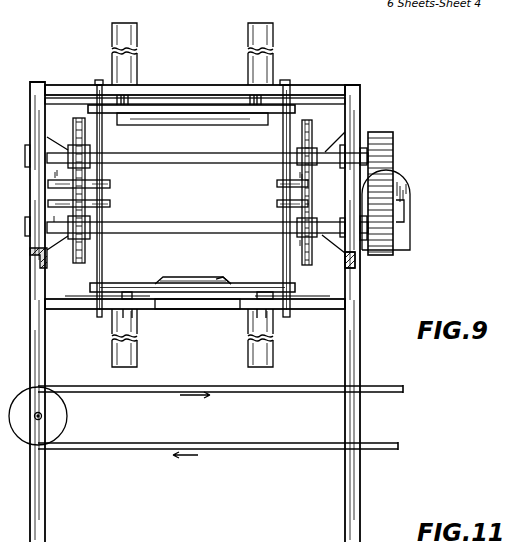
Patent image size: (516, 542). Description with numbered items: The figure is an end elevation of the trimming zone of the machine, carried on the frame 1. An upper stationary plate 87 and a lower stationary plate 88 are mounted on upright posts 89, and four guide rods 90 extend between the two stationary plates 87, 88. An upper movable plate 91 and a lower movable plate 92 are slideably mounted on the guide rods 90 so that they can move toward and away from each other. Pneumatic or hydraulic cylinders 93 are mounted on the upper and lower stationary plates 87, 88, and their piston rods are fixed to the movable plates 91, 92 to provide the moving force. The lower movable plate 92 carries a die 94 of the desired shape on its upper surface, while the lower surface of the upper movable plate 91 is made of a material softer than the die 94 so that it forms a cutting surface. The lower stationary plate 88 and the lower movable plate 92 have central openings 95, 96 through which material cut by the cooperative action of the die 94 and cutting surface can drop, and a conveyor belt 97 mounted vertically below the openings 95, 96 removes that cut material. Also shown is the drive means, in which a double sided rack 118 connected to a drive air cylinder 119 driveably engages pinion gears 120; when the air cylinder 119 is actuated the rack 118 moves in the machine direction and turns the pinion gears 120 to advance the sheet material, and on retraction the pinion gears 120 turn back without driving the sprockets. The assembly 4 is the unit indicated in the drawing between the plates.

The frame 1 is at (356, 268).
The drive assembly 4 is at (196, 187).
The upper stationary plate 87 is at (210, 92).
The lower stationary plate 88 is at (189, 309).
The upright posts 89 is at (45, 488).
The guide rods 90 is at (103, 140).
The upper movable plate 91 is at (212, 108).
The lower movable plate 92 is at (260, 287).
The pneumatic or hydraulic cylinders 93 is at (137, 68).
The die 94 is at (183, 280).
The central opening 95 is at (220, 279).
The central opening 96 is at (236, 300).
The conveyor belt 97 is at (191, 386).
The double sided rack 118 is at (392, 190).
The drive air cylinder 119 is at (394, 213).
The pinion gears 120 is at (378, 132).